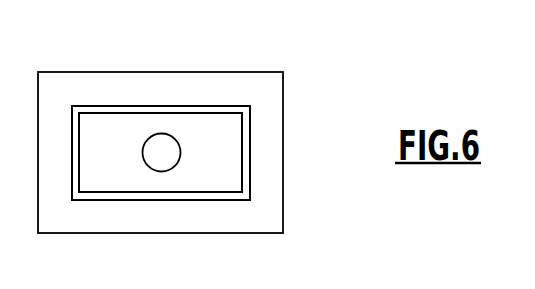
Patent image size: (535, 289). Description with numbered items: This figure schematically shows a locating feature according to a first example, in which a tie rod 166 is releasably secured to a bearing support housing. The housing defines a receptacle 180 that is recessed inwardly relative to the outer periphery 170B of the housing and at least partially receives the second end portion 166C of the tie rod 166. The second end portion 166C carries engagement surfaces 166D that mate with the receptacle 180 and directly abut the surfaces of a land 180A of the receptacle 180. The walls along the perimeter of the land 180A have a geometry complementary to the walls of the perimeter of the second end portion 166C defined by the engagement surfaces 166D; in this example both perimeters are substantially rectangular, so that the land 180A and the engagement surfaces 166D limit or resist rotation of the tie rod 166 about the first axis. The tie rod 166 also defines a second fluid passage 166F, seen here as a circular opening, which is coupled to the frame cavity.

The outer periphery 170B is at (272, 103).
The receptacle 180 is at (105, 93).
The land 180A is at (137, 106).
The tie rod 166 is at (252, 168).
The engagement surfaces 166D is at (163, 113).
The second end portion 166C is at (230, 150).
The second fluid passage 166F is at (166, 134).